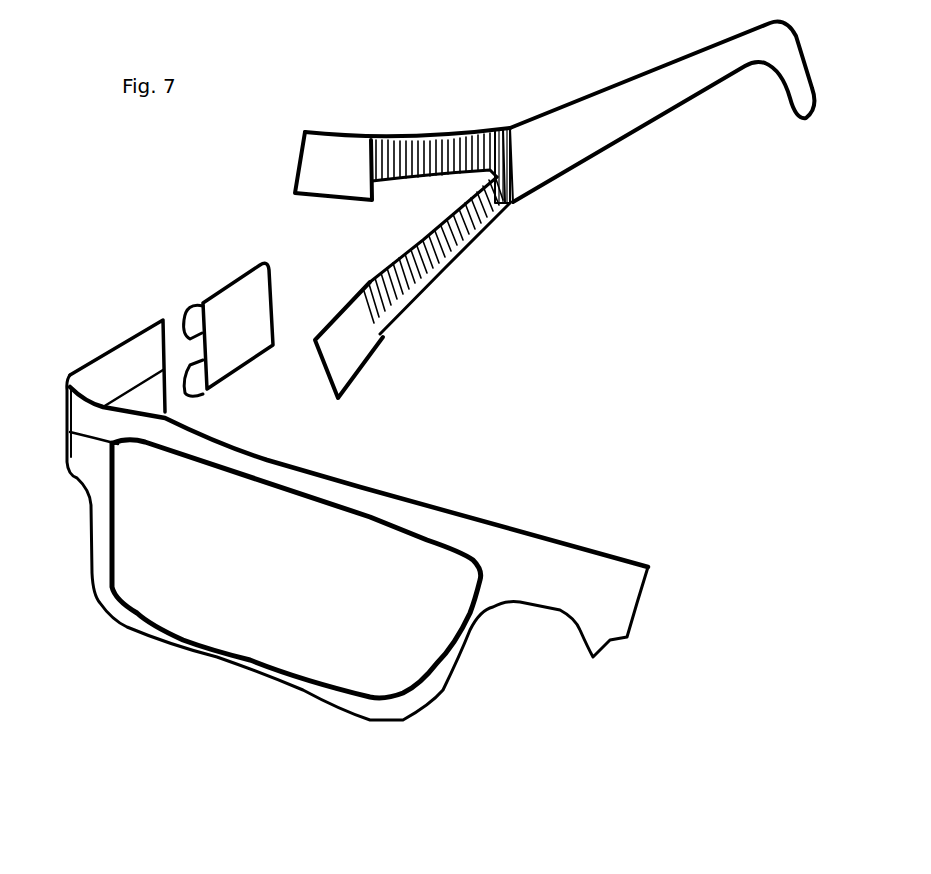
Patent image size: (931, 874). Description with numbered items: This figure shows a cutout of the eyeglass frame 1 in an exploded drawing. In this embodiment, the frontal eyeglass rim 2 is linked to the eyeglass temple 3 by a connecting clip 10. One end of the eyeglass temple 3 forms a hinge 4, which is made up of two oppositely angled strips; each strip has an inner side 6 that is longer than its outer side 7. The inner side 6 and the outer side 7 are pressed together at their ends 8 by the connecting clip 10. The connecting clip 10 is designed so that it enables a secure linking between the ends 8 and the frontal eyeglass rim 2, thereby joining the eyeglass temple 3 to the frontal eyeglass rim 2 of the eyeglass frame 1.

The eyeglass frame 1 is at (727, 370).
The frontal eyeglass rim 2 is at (408, 510).
The eyeglass temple 3 is at (605, 125).
The hinge 4 is at (432, 122).
The inner side 6 is at (407, 180).
The outer side 7 is at (460, 133).
The ends 8 is at (320, 162).
The connecting clip 10 is at (230, 295).